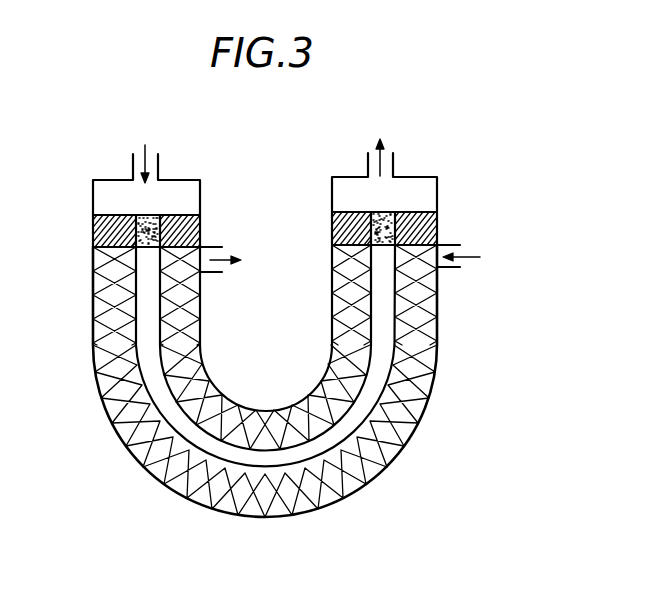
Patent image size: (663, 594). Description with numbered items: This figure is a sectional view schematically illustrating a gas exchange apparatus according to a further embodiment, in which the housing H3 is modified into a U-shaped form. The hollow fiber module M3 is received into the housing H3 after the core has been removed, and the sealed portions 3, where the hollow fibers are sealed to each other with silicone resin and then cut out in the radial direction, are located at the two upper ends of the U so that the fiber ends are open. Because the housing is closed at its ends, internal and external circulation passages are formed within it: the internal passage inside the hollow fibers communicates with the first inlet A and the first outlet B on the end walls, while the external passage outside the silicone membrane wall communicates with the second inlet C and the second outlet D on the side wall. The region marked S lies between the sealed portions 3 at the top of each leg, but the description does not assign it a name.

The first inlet A is at (160, 167).
The first outlet B is at (394, 167).
The second inlet C is at (451, 268).
The second outlet D is at (216, 273).
The sample / sensor section S is at (140, 215).
The sealed portions 3 is at (93, 233).
The hollow fiber module M3 is at (421, 210).
The housing H3 is at (435, 390).